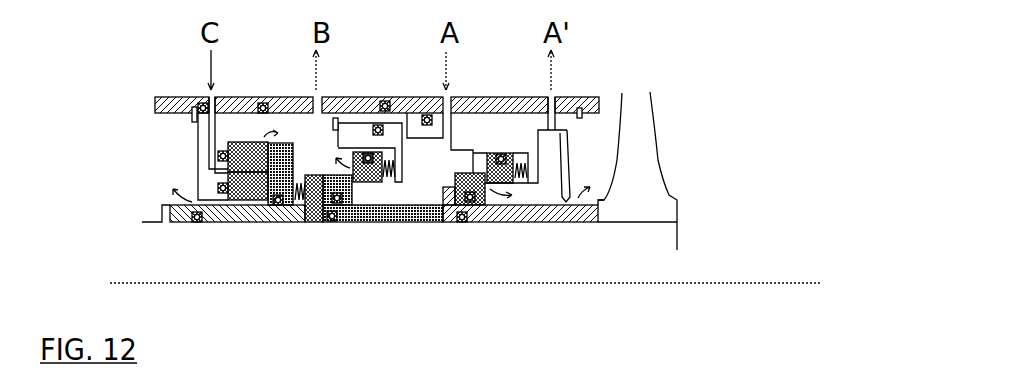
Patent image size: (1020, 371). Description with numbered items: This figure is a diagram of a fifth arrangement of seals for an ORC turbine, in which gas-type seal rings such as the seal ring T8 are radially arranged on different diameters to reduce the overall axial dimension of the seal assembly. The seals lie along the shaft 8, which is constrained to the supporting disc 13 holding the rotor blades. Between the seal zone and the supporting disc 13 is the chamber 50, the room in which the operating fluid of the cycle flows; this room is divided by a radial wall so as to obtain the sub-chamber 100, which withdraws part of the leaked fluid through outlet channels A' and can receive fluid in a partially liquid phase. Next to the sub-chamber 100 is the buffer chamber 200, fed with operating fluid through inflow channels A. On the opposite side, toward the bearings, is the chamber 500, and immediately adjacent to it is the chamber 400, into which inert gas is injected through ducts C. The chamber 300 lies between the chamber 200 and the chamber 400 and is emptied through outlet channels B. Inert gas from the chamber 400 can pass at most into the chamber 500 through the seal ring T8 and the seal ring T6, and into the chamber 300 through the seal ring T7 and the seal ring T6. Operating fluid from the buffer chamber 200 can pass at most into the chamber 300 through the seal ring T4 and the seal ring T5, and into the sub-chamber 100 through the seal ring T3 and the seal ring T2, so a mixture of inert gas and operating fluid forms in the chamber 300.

The shaft 8 is at (666, 241).
The supporting disc 13 is at (662, 200).
The chamber 50 is at (602, 140).
The sub-chamber 100 is at (551, 147).
The buffer chamber 200 is at (471, 165).
The chamber 300 is at (329, 165).
The chamber 400 is at (172, 165).
The chamber 500 is at (199, 165).
The seal ring T2 is at (518, 185).
The seal ring T3 is at (492, 199).
The seal ring T4 is at (390, 186).
The seal ring T5 is at (372, 183).
The seal ring T6 is at (282, 182).
The seal ring T7 is at (247, 162).
The seal ring T8 is at (242, 193).